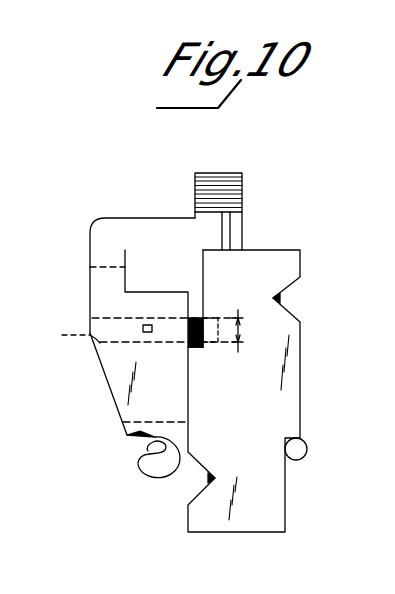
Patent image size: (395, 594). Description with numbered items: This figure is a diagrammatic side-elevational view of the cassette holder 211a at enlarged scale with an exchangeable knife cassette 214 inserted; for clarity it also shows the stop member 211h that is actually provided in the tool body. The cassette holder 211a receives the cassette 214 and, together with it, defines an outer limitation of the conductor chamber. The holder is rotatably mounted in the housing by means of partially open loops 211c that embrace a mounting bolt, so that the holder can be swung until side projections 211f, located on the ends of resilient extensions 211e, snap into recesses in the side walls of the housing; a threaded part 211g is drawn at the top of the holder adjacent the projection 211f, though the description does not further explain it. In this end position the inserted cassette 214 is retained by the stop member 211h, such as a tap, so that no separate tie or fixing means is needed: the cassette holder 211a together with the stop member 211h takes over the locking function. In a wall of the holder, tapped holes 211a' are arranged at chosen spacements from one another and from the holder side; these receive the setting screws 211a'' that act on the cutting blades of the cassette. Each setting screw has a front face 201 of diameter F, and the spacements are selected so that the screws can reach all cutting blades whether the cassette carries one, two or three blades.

The resilient extension 211e is at (148, 222).
The threaded adjusting screw 211g is at (238, 194).
The side projection 211f is at (227, 233).
The setting screw 211a'' is at (164, 298).
The tapped hole 211a' is at (53, 335).
The front face 201 is at (213, 322).
The diameter F is at (243, 331).
The knife cassette 214 is at (252, 410).
The cassette holder 211a is at (93, 384).
The partially open loop 211c is at (150, 452).
The stop member 211h is at (297, 460).